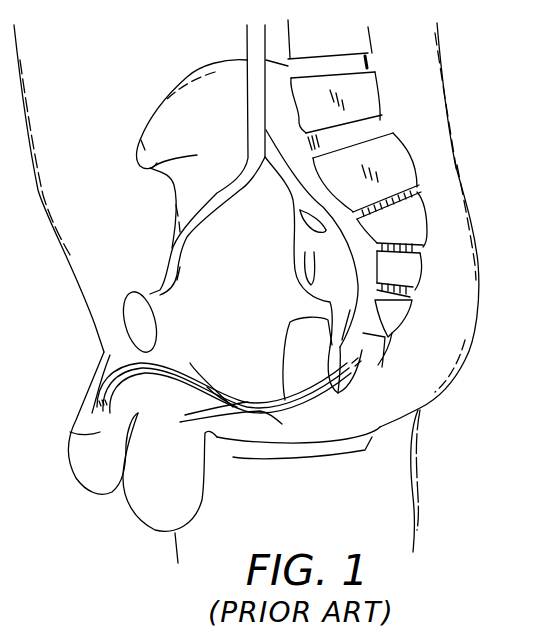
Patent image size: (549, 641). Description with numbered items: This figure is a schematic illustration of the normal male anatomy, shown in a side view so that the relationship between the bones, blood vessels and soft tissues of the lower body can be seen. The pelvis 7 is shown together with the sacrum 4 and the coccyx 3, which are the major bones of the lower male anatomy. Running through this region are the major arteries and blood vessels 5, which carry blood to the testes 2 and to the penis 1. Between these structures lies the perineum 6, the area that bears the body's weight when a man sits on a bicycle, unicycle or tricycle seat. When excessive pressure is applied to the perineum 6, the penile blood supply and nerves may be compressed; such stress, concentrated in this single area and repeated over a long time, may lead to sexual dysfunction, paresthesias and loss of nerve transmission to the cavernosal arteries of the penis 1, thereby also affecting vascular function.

The penis 1 is at (70, 428).
The testes 2 is at (150, 500).
The coccyx 3 is at (358, 363).
The sacrum 4 is at (400, 258).
The major arteries and blood vessels 5 is at (305, 400).
The perineum 6 is at (275, 460).
The pelvis 7 is at (160, 163).